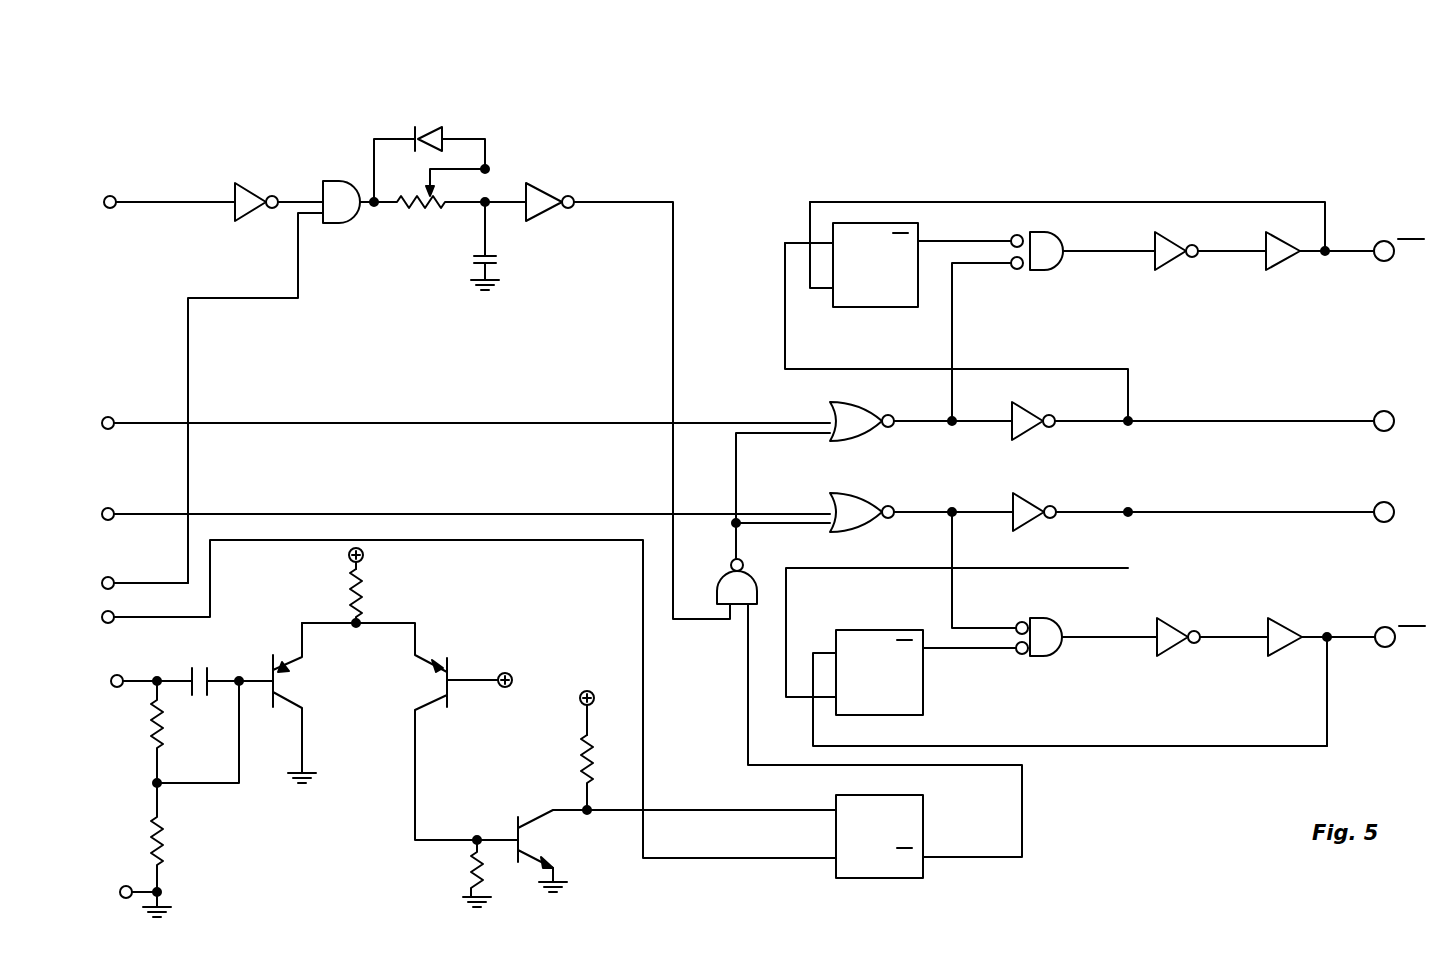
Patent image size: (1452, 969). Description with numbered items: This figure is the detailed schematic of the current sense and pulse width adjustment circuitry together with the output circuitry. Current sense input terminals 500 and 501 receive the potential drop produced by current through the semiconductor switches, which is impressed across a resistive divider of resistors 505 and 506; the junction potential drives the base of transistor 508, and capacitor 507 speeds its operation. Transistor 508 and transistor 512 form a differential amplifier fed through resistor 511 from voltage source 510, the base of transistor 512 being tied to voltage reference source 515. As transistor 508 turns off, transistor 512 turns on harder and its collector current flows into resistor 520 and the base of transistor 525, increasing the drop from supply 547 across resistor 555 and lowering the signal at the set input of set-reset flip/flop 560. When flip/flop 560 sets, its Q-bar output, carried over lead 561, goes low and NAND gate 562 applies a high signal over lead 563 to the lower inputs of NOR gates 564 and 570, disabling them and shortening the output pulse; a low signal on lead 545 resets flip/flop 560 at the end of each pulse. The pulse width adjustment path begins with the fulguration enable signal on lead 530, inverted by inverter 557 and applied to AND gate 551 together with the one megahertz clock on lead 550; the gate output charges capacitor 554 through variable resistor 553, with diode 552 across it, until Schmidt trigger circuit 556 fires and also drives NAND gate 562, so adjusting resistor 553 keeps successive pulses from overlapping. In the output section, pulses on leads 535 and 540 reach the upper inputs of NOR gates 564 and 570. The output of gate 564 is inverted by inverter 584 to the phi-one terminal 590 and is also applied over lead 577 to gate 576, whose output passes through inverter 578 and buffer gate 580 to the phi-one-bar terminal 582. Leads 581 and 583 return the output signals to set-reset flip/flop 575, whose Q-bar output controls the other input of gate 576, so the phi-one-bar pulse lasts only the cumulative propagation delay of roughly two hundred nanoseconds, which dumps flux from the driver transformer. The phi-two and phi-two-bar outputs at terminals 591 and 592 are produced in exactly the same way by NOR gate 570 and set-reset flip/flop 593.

The current sense input terminal 500 is at (137, 678).
The current sense input terminal 501 is at (140, 874).
The resistor 505 is at (164, 737).
The resistor 506 is at (164, 860).
The capacitor 507 is at (210, 670).
The transistor 508 is at (288, 680).
The voltage source 510 is at (364, 556).
The resistor 511 is at (362, 593).
The transistor 512 is at (436, 685).
The voltage reference source 515 is at (505, 688).
The resistor 520 is at (470, 870).
The transistor 525 is at (530, 846).
The lead 530 is at (174, 202).
The lead 535 is at (168, 422).
The lead 540 is at (168, 513).
The lead 545 is at (174, 614).
The supply 547 is at (594, 700).
The lead 550 is at (154, 580).
The AND gate 551 is at (340, 178).
The diode 552 is at (438, 130).
The variable resistor 553 is at (433, 222).
The capacitor 554 is at (498, 250).
The resistor 555 is at (578, 763).
The Schmidt trigger circuit 556 is at (552, 190).
The inverter 557 is at (253, 183).
The set-reset flip/flop 560 is at (923, 820).
The conductor 561 is at (748, 712).
The NAND gate 562 is at (759, 580).
The lead 563 is at (736, 485).
The NOR gate 564 is at (846, 402).
The NOR gate 570 is at (878, 522).
The set-reset flip/flop 575 is at (918, 237).
The NOR gate 576 is at (1074, 244).
The conductor 577 is at (952, 312).
The inverter 578 is at (1170, 243).
The buffer gate 580 is at (1280, 245).
The feedback conductor 581 is at (1325, 216).
The terminal 582 is at (1352, 251).
The conductor 583 is at (1081, 362).
The inverter 584 is at (1025, 404).
The terminal 590 is at (1260, 421).
The output terminal 591 is at (1264, 512).
The output terminal 592 is at (1348, 632).
The set-reset flip/flop 593 is at (923, 695).